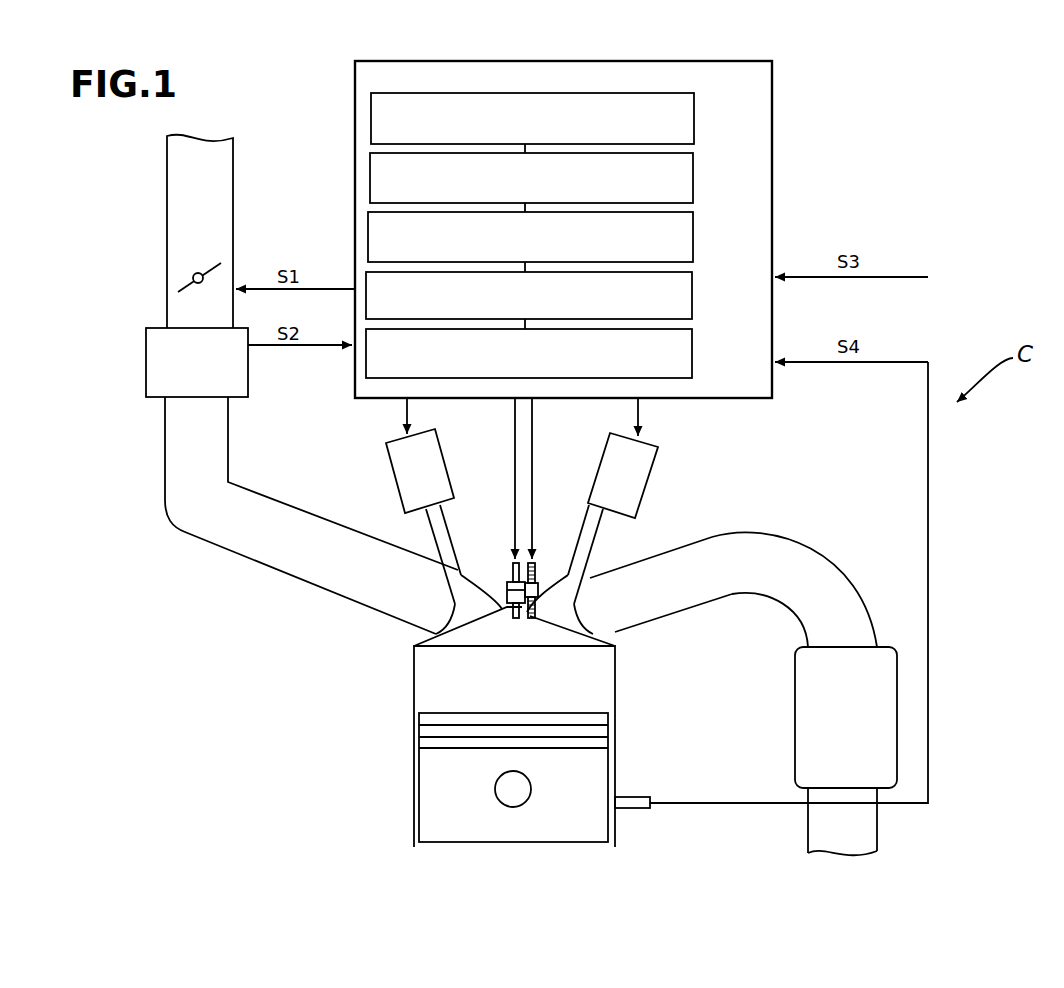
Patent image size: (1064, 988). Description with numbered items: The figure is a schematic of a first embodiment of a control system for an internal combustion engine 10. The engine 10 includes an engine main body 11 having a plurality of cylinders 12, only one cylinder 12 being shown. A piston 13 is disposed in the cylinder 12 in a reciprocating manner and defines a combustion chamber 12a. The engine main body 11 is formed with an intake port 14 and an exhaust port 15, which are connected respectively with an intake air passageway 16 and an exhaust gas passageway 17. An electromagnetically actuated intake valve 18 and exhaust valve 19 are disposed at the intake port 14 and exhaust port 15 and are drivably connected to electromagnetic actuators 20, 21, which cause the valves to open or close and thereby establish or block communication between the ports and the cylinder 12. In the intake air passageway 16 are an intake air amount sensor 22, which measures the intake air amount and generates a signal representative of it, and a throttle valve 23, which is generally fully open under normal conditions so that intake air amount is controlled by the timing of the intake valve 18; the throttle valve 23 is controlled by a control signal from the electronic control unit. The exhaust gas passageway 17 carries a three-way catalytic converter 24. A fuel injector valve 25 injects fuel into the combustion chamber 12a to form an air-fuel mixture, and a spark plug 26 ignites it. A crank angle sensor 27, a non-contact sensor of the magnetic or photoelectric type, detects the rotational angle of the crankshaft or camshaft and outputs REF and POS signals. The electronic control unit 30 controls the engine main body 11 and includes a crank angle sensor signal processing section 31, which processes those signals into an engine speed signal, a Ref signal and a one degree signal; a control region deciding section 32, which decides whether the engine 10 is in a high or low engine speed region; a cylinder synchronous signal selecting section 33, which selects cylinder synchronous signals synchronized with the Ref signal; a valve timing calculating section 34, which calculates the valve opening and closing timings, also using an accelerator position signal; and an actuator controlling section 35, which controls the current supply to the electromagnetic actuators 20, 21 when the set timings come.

The internal combustion engine 10 is at (226, 589).
The engine main body 11 is at (396, 689).
The engine cylinder 12 is at (605, 830).
The combustion chamber 12a is at (592, 677).
The piston 13 is at (437, 800).
The intake port 14 is at (393, 608).
The exhaust port 15 is at (620, 610).
The intake air passageway 16 is at (172, 490).
The exhaust gas passageway 17 is at (812, 557).
The intake valve 18 is at (448, 610).
The exhaust valve 19 is at (640, 578).
The electromagnetic actuator 20 is at (443, 457).
The electromagnetic actuator 21 is at (602, 450).
The intake air amount sensor 22 is at (146, 360).
The throttle valve 23 is at (178, 285).
The three-way catalytic converter 24 is at (893, 713).
The fuel injector valve 25 is at (507, 572).
The spark plug 26 is at (538, 577).
The crank angle sensor 27 is at (637, 797).
The electronic control unit 30 is at (619, 229).
The crank angle sensor signal processing section 31 is at (694, 118).
The control region deciding section 32 is at (693, 177).
The cylinder synchronous signal selecting section 33 is at (693, 233).
The valve timing calculating section 34 is at (692, 292).
The actuator controlling section 35 is at (692, 353).